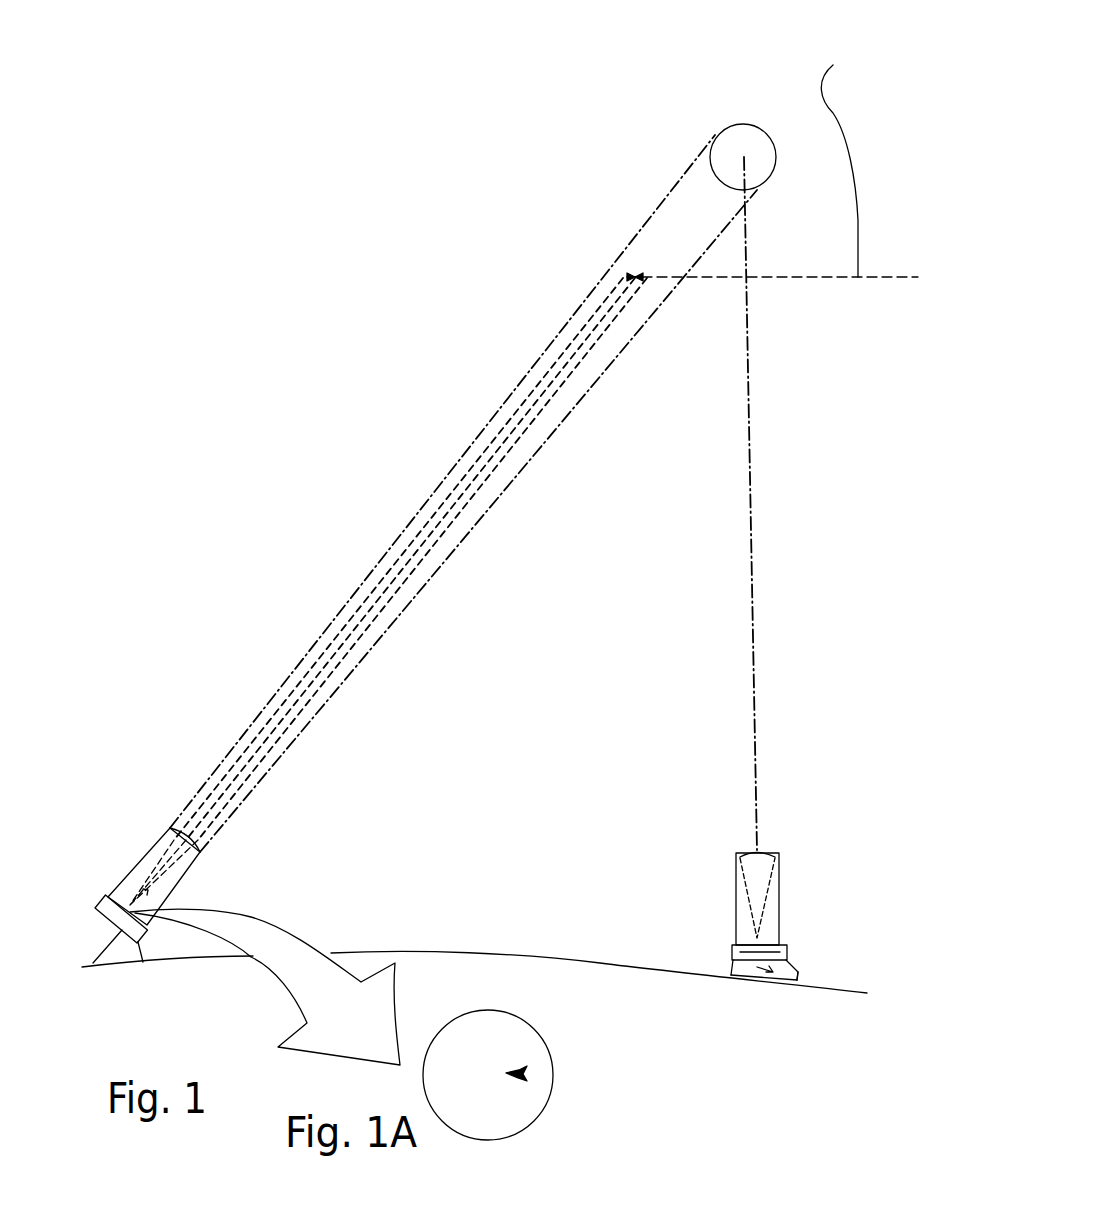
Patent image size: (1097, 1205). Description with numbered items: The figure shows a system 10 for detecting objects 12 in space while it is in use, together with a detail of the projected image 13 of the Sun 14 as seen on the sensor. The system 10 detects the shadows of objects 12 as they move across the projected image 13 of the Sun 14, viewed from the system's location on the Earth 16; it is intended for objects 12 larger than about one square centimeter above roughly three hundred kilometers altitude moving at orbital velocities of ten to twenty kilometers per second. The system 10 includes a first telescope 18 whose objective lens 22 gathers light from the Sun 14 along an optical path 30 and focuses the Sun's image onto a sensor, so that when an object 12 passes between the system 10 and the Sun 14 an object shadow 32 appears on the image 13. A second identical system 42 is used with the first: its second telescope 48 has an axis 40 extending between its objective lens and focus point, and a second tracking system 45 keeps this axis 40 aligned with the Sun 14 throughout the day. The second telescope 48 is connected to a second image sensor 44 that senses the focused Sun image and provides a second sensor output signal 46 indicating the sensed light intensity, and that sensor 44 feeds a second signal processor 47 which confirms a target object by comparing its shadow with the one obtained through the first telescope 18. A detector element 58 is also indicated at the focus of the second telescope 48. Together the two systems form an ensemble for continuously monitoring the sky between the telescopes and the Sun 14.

In FIG. 1, the system 10 is at (93, 853).
In FIG. 1, the object 12 is at (632, 273).
In FIG. 1A, the projected image of the Sun 13 is at (547, 1105).
In FIG. 1, the Sun 14 is at (753, 123).
In FIG. 1, the Earth 16 is at (517, 958).
In FIG. 1, the first telescope 18 is at (146, 852).
In FIG. 1, the objective lens 22 is at (203, 842).
In FIG. 1, the optical path 30 is at (347, 648).
In FIG. 1A, the object shadow 32 is at (513, 1059).
In FIG. 1, the axis 40 is at (753, 700).
In FIG. 1, the second identical system 42 is at (857, 888).
In FIG. 1, the second image sensor 44 is at (779, 933).
In FIG. 1, the second tracking system 45 is at (798, 973).
In FIG. 1, the second sensor output signal 46 is at (733, 968).
In FIG. 1, the second signal processor 47 is at (773, 953).
In FIG. 1, the second telescope 48 is at (735, 885).
In FIG. 1, the detector 58 is at (757, 938).